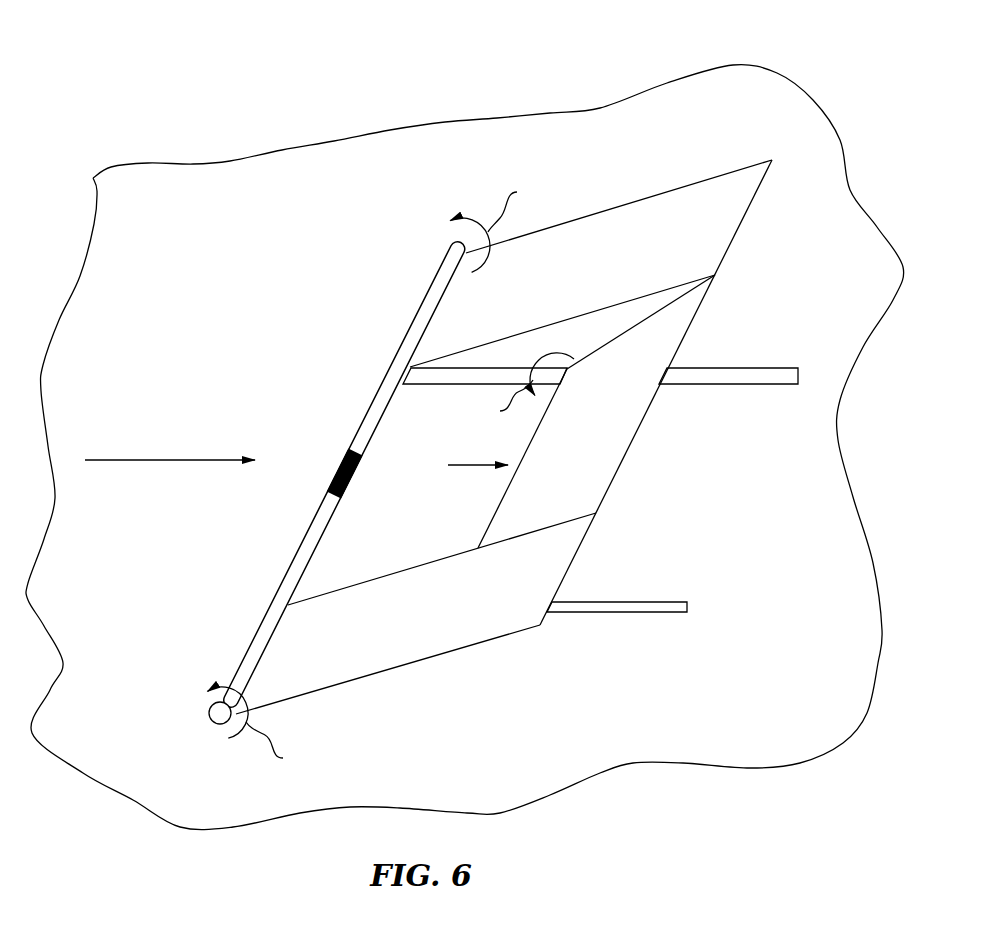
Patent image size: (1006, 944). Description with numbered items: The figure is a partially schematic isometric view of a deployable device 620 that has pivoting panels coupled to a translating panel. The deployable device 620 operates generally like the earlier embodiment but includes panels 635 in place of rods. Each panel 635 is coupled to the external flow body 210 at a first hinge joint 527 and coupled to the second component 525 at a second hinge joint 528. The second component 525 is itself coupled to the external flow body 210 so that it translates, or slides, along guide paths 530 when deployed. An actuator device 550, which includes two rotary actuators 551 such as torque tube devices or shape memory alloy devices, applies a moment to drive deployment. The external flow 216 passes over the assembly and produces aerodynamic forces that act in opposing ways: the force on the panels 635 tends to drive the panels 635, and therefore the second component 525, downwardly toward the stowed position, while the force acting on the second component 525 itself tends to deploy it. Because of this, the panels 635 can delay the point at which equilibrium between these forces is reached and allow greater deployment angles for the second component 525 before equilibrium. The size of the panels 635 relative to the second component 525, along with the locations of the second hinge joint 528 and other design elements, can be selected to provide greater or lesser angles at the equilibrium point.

The external flow body 210 is at (862, 653).
The external flow 216 is at (107, 460).
The second component 525 is at (622, 432).
The first hinge joint 527 is at (450, 248).
The second hinge joint 528 is at (716, 275).
The guide paths 530 is at (776, 369).
The actuator device 550 is at (321, 497).
The rotary actuators 551 is at (421, 321).
The deployable device 620 is at (470, 402).
The panels 635 is at (732, 172).